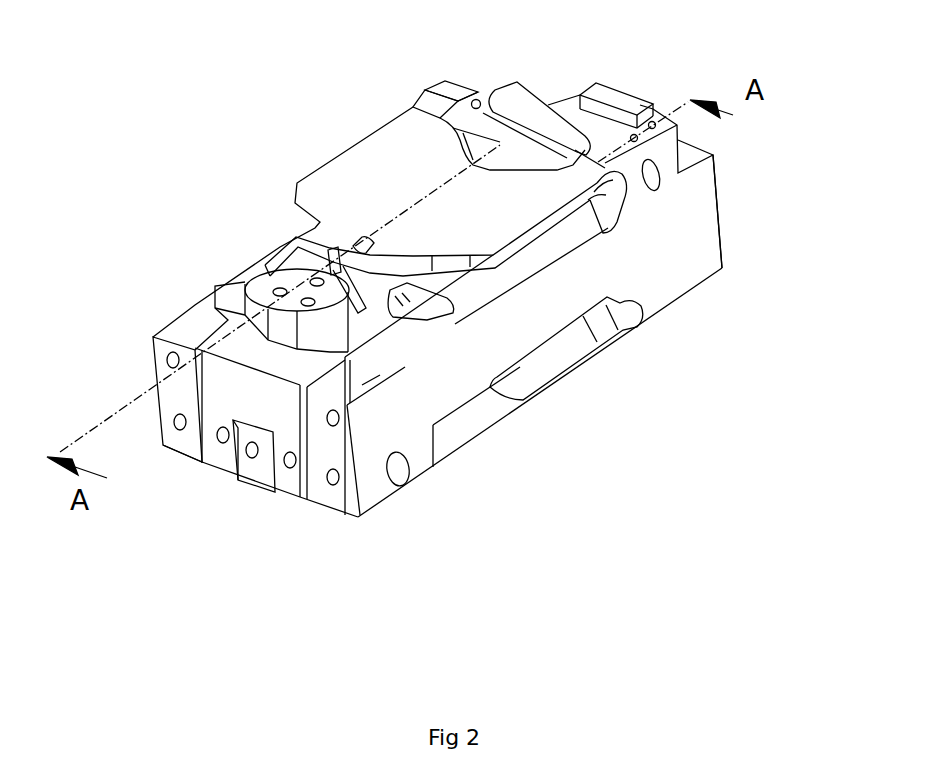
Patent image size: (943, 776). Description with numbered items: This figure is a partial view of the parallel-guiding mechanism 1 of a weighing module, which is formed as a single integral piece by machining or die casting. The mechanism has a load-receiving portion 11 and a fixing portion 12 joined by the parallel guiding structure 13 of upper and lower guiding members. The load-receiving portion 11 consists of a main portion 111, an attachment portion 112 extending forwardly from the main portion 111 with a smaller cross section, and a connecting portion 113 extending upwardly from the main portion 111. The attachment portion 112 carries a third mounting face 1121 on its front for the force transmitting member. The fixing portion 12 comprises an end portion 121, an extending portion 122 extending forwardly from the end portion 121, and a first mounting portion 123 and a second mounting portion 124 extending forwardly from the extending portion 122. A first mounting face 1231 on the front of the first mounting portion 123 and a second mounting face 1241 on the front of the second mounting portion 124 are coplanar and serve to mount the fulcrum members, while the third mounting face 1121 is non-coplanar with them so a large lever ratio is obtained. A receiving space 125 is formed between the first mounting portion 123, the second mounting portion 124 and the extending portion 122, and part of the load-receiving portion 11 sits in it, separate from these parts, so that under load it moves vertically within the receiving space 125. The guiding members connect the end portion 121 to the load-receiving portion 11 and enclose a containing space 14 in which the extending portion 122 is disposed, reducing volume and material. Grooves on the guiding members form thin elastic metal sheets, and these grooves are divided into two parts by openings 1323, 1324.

The parallel-guiding mechanism 1 is at (596, 378).
The load-receiving portion 11 is at (244, 433).
The main portion 111 is at (233, 382).
The attachment portion 112 is at (246, 488).
The third mounting face 1121 is at (208, 486).
The connecting portion 113 is at (273, 264).
The fixing portion 12 is at (639, 203).
The end portion 121 is at (723, 249).
The extending portion 122 is at (591, 365).
The first mounting portion 123 is at (436, 459).
The first mounting face 1231 is at (376, 458).
The second mounting portion 124 is at (137, 391).
The second mounting face 1241 is at (150, 448).
The receiving space 125 is at (476, 436).
The parallel guiding structure 13 is at (379, 215).
The opening 1323 is at (429, 221).
The opening 1324 is at (522, 94).
The containing space 14 is at (480, 367).